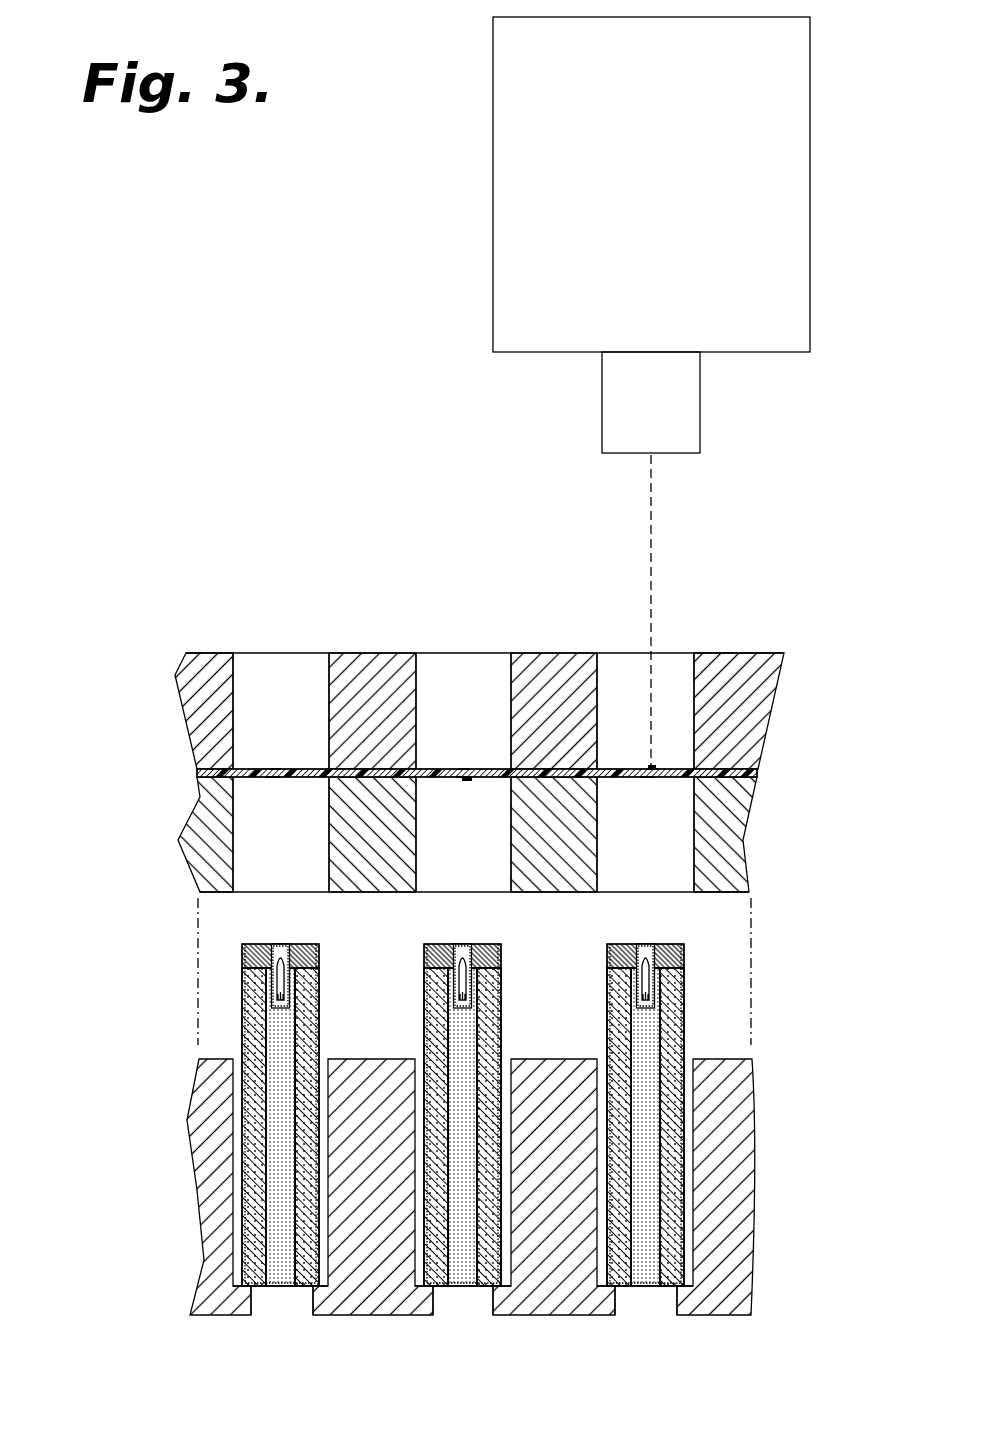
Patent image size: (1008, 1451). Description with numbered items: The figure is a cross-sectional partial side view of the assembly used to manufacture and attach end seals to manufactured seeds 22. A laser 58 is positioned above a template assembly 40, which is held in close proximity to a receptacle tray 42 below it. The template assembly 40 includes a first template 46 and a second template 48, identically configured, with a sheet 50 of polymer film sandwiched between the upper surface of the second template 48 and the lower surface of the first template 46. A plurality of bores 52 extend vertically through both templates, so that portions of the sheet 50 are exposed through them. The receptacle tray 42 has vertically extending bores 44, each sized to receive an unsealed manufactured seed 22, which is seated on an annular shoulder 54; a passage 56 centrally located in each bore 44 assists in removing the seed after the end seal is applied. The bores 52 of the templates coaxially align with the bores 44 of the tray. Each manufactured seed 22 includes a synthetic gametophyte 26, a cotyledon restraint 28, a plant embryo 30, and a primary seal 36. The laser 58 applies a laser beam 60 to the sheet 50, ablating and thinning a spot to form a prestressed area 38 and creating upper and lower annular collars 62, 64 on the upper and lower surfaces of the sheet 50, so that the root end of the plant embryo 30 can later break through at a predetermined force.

The manufactured seed 22 is at (468, 1097).
The synthetic gametophyte 26 is at (252, 1035).
The cotyledon restraint 28 is at (250, 1142).
The plant embryo 30 is at (656, 975).
The primary seal 36 is at (247, 955).
The prestressed area 38 is at (455, 770).
The template assembly 40 is at (496, 752).
The receptacle tray 42 is at (491, 1209).
The bore 44 is at (695, 1105).
The first template 46 is at (208, 660).
The second template 48 is at (200, 855).
The sheet 50 is at (197, 772).
The bore 52 is at (316, 652).
The annular shoulder 54 is at (236, 1286).
The passage 56 is at (256, 1300).
The laser 58 is at (493, 160).
The laser beam 60 is at (650, 528).
The upper annular collar 62 is at (463, 772).
The lower annular collar 64 is at (272, 778).